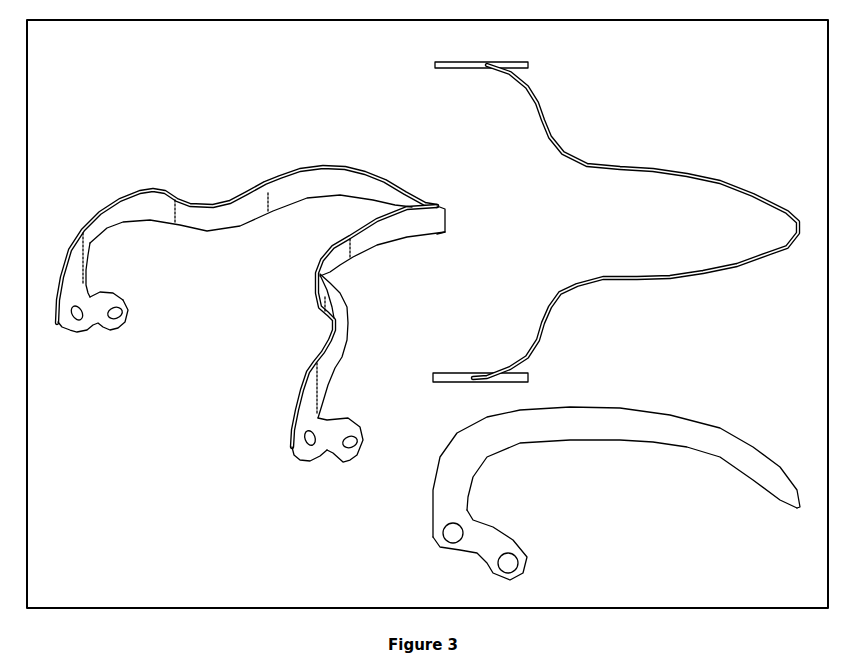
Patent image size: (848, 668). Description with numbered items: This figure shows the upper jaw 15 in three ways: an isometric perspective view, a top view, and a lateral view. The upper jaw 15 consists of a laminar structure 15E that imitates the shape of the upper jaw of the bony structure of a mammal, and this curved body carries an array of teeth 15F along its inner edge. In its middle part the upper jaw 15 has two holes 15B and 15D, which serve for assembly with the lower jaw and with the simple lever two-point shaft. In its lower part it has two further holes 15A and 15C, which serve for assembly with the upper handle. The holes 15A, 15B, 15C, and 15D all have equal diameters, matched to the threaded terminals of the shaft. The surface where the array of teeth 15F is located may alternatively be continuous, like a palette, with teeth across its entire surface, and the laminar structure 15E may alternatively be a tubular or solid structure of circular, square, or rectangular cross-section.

The upper jaw 15 is at (405, 53).
The hole 15A is at (357, 437).
The hole 15B is at (307, 437).
The hole 15C is at (128, 312).
The hole 15D is at (90, 297).
The laminar structure 15E is at (420, 217).
The array of teeth 15F is at (405, 232).